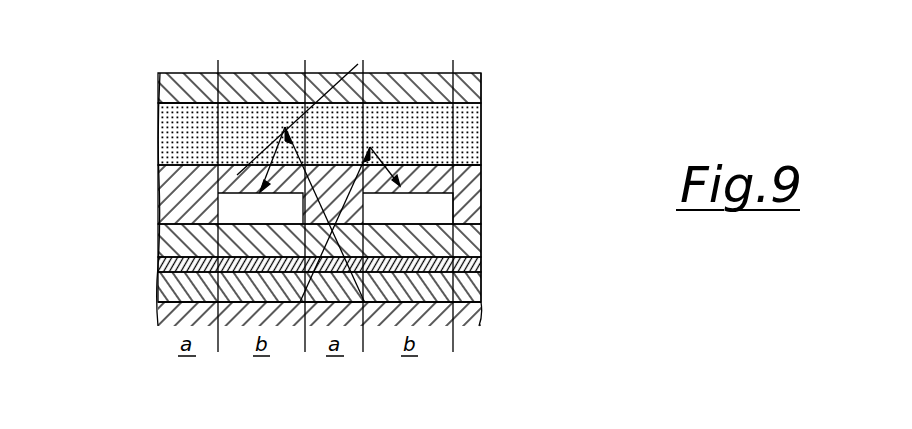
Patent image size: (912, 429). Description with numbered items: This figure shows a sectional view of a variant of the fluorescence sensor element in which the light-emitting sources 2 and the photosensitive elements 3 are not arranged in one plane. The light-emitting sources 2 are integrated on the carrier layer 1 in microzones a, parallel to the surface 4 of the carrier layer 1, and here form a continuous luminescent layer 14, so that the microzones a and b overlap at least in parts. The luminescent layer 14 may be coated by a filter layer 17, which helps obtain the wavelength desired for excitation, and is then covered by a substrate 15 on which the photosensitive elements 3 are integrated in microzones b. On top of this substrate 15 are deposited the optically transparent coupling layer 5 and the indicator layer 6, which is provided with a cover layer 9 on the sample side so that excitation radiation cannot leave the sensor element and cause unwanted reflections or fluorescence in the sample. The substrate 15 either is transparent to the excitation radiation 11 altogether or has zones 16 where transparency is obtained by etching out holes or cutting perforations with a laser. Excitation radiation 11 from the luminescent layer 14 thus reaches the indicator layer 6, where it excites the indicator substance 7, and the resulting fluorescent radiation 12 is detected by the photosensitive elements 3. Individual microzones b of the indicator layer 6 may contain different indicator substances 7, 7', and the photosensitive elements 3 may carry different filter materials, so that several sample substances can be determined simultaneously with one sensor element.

The carrier layer 1 is at (470, 323).
The light-emitting sources 2 is at (160, 293).
The photosensitive elements 3 is at (227, 209).
The surface of the carrier layer 4 is at (250, 300).
The coupling layer 5 is at (482, 177).
The indicator layer 6 is at (473, 145).
The indicator substance 7 is at (377, 129).
The indicator substance 7' is at (204, 121).
The cover layer 9 is at (465, 90).
The excitation radiation 11 is at (312, 108).
The fluorescent radiation 12 is at (262, 180).
The luminescent layer 14 is at (472, 285).
The substrate 15 is at (465, 245).
The zones 16 is at (190, 242).
The filter layer 17 is at (472, 264).